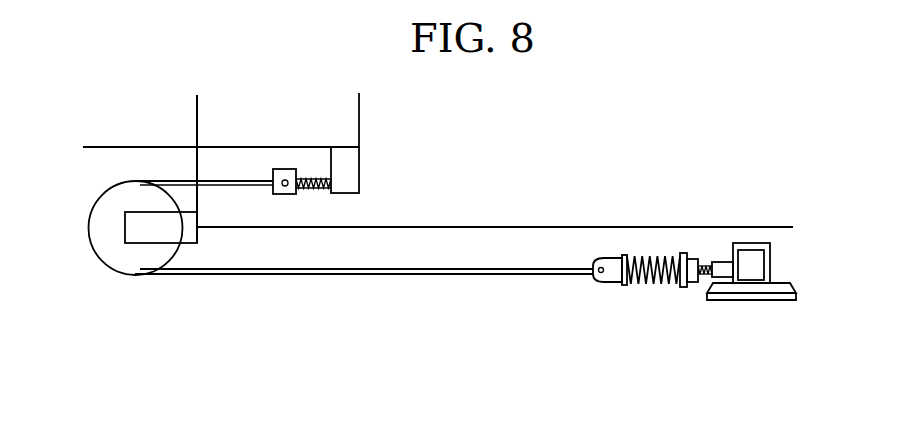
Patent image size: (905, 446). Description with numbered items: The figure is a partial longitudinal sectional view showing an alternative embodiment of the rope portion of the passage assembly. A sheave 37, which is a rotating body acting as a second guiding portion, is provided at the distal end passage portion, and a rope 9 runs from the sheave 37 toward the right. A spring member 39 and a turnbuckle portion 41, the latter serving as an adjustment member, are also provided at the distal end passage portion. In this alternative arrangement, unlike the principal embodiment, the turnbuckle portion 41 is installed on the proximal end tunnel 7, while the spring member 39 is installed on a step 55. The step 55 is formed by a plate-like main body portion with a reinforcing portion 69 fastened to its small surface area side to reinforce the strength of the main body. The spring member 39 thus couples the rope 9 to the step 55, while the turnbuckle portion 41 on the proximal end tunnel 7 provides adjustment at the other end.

The proximal end tunnel 7 is at (359, 120).
The wire 9 is at (522, 227).
The sheave 37 is at (90, 213).
The spring member 39 is at (653, 305).
The turnbuckle portion 41 is at (316, 199).
The step 55 is at (753, 318).
The reinforcing portion 69 is at (770, 262).